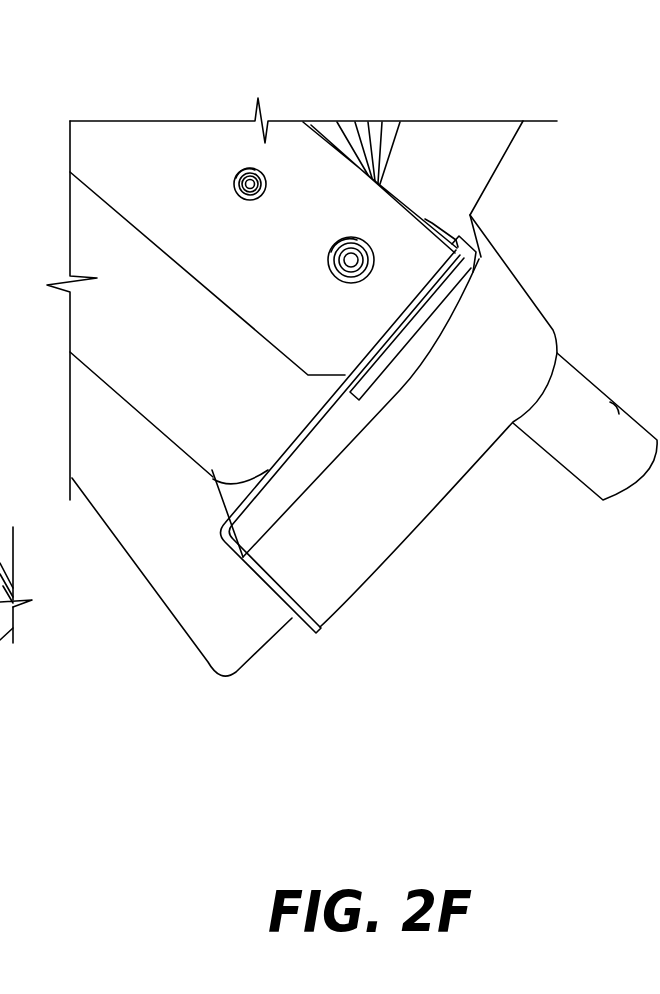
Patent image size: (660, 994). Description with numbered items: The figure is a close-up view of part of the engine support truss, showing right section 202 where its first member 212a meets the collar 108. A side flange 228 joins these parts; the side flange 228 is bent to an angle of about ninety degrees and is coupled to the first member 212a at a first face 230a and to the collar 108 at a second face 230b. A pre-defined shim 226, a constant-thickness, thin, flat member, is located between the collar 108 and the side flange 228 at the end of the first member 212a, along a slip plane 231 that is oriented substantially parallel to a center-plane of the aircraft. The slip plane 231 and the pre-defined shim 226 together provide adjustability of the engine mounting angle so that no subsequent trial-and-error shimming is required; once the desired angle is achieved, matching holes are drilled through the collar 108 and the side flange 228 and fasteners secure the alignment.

The right section 202 is at (155, 108).
The first member 212a is at (162, 367).
The collar 108 is at (428, 477).
The slip plane 231 is at (307, 470).
The side flange 228 is at (241, 560).
The pre-defined shim 226 is at (463, 280).
The first face 230a is at (224, 498).
The second face 230b is at (278, 612).